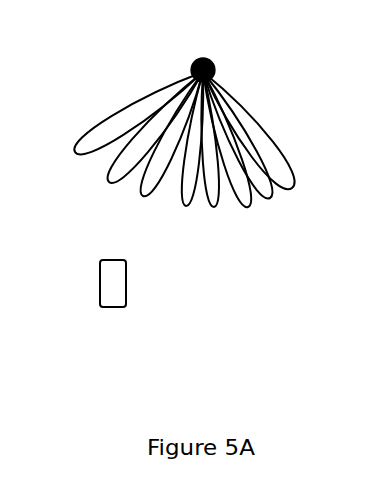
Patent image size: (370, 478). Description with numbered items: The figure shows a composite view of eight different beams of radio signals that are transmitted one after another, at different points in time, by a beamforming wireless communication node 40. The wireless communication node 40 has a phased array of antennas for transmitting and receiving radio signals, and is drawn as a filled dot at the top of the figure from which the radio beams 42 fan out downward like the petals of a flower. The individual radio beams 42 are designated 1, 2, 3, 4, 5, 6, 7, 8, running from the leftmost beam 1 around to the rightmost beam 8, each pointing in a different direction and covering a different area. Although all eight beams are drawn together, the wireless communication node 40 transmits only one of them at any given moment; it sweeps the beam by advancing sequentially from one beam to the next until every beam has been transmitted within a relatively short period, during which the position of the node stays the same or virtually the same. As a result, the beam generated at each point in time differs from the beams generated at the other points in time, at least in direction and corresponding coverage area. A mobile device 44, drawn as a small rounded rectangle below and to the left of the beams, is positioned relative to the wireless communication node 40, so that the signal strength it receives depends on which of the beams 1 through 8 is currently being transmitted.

The wireless communication node 40 is at (215, 59).
The radio beams 42 is at (242, 119).
The mobile device 44 is at (125, 293).
The beam 1 is at (130, 120).
The beam 2 is at (148, 138).
The beam 3 is at (168, 148).
The beam 4 is at (189, 152).
The beam 5 is at (210, 152).
The beam 6 is at (229, 151).
The beam 7 is at (243, 148).
The beam 8 is at (255, 141).